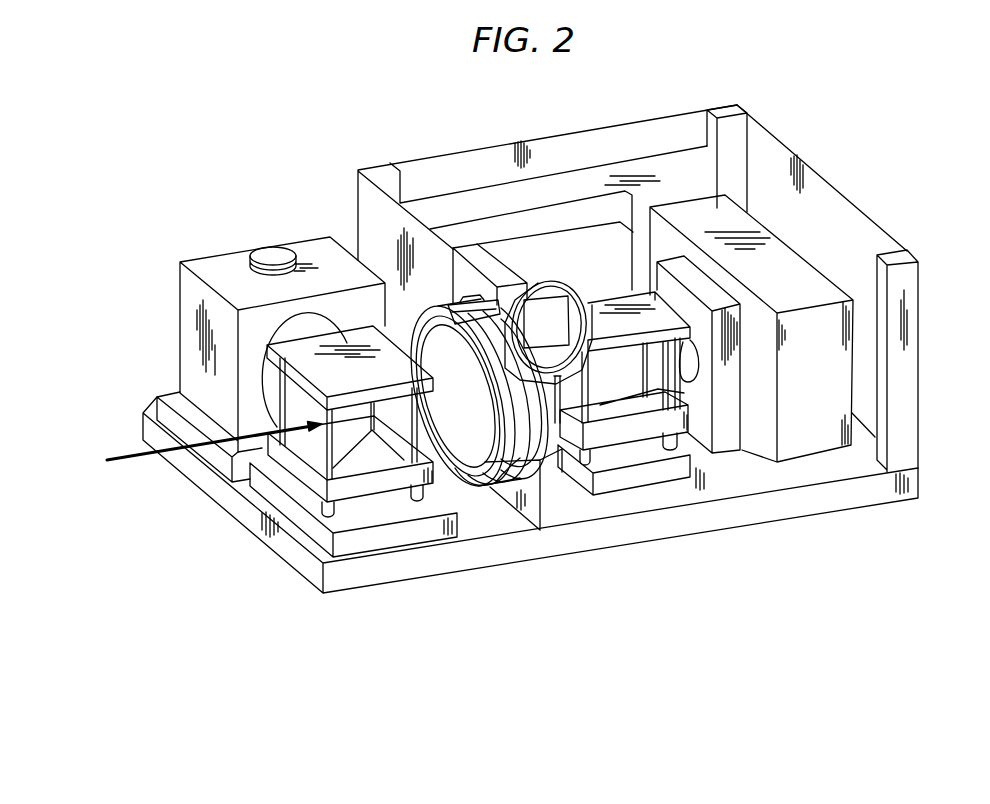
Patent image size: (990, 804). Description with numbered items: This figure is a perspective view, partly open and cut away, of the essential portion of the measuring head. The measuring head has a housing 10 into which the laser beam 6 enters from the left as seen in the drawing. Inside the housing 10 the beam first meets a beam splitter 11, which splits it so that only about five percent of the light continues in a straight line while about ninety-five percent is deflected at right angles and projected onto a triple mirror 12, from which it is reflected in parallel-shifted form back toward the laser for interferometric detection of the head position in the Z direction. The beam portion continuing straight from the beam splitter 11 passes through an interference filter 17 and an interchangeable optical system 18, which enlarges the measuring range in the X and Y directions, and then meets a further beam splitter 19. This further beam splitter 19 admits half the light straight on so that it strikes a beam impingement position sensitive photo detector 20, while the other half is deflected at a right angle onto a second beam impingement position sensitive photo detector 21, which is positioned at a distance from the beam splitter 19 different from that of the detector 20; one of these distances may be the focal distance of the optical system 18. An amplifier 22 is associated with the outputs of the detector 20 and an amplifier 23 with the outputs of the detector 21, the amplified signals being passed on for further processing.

The laser beam 6 is at (121, 452).
The housing 10 is at (910, 412).
The beam splitter 11 is at (370, 457).
The triple mirror 12 is at (215, 265).
The interference filter 17 is at (470, 432).
The interchangeable optical system 18 is at (520, 420).
The further beam splitter 19 is at (660, 390).
The beam impingement position sensitive photo detector 20 is at (730, 403).
The beam impingement position sensitive photo detector 21 is at (567, 263).
The amplifier 22 is at (787, 268).
The amplifier 23 is at (468, 207).